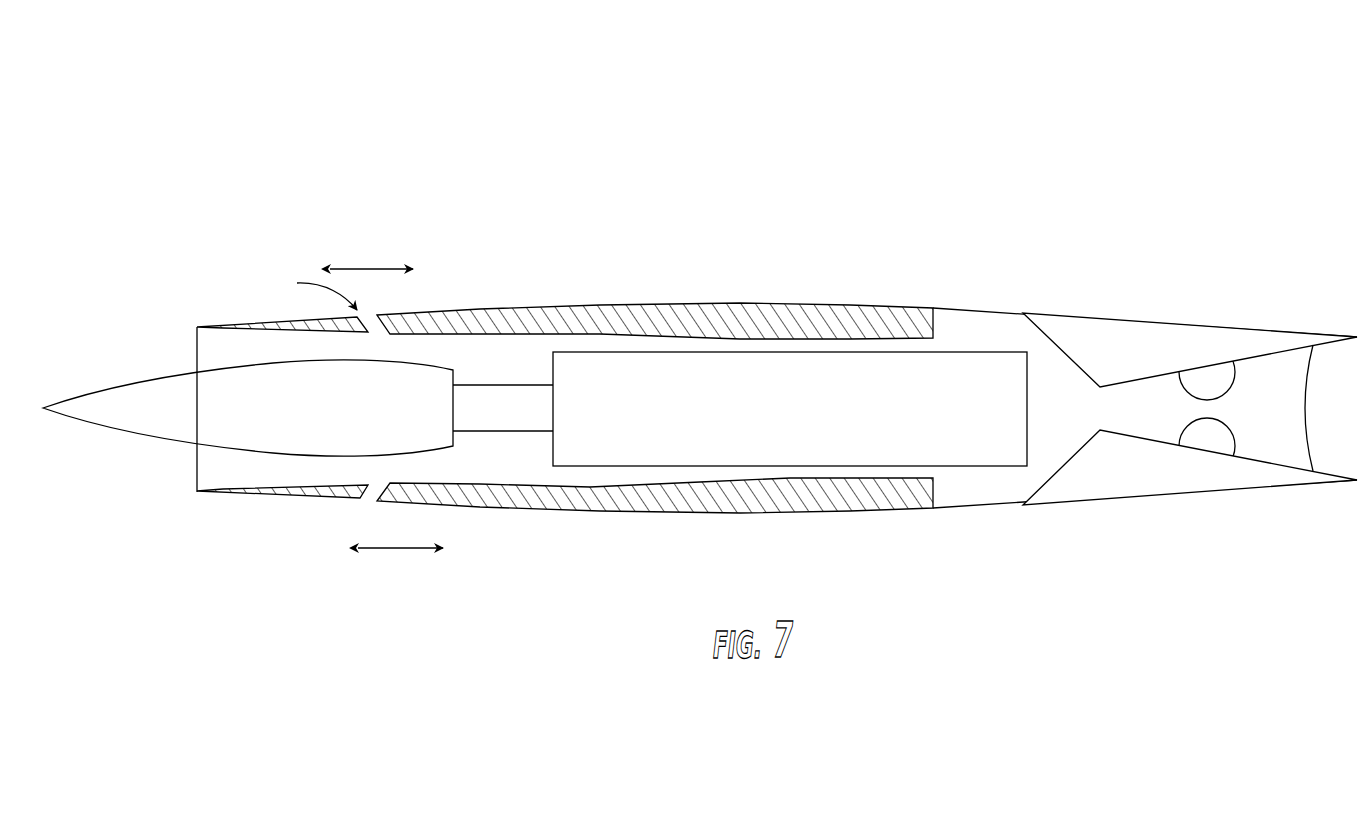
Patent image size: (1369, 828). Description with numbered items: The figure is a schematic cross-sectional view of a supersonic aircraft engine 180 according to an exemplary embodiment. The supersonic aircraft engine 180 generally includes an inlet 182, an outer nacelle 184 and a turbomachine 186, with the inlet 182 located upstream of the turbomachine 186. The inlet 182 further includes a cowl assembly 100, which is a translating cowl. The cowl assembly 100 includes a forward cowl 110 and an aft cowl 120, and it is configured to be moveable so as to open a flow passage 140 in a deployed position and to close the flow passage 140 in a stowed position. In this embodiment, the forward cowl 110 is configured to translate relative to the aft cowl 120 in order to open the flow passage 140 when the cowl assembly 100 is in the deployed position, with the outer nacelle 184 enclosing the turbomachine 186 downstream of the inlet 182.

The cowl assembly 100 is at (280, 558).
The forward cowl 110 is at (270, 327).
The aft cowl 120 is at (655, 359).
The flow passage 140 is at (378, 312).
The supersonic aircraft engine 180 is at (1107, 145).
The inlet 182 is at (367, 510).
The outer nacelle 184 is at (768, 305).
The turbomachine 186 is at (958, 368).